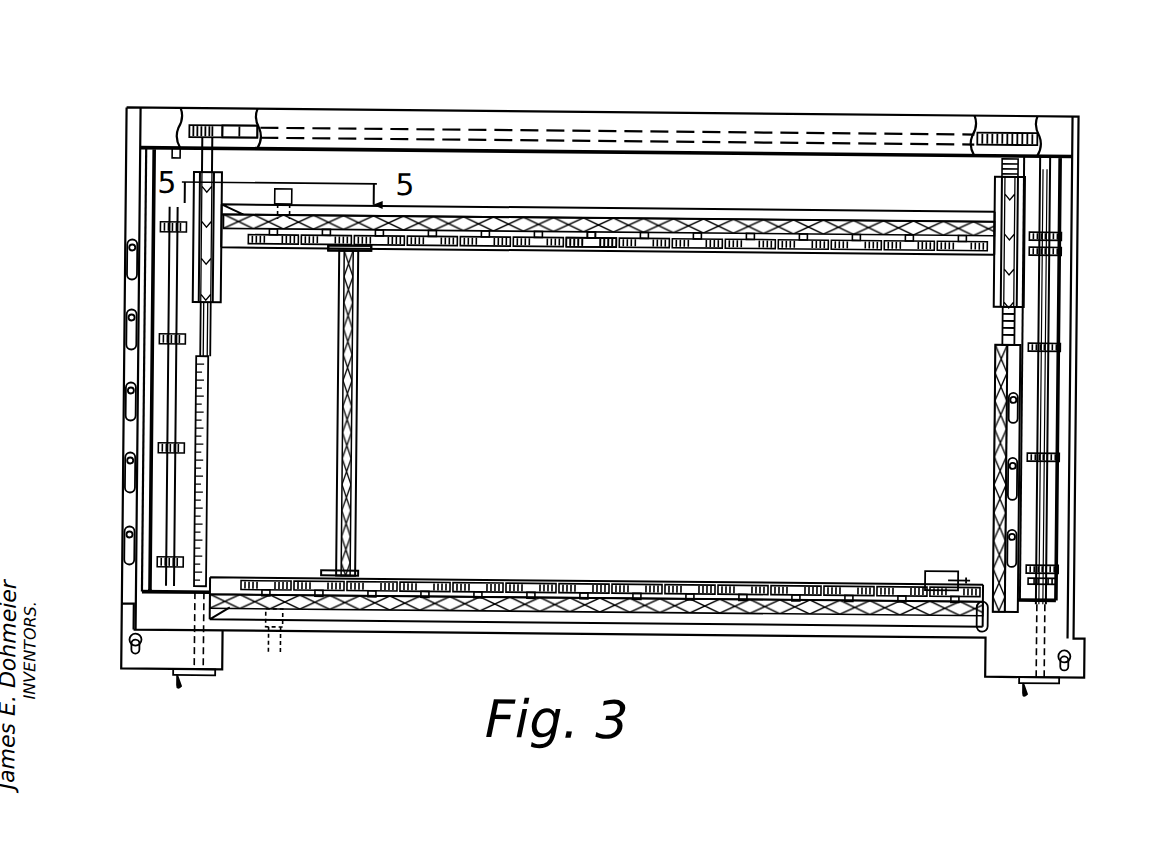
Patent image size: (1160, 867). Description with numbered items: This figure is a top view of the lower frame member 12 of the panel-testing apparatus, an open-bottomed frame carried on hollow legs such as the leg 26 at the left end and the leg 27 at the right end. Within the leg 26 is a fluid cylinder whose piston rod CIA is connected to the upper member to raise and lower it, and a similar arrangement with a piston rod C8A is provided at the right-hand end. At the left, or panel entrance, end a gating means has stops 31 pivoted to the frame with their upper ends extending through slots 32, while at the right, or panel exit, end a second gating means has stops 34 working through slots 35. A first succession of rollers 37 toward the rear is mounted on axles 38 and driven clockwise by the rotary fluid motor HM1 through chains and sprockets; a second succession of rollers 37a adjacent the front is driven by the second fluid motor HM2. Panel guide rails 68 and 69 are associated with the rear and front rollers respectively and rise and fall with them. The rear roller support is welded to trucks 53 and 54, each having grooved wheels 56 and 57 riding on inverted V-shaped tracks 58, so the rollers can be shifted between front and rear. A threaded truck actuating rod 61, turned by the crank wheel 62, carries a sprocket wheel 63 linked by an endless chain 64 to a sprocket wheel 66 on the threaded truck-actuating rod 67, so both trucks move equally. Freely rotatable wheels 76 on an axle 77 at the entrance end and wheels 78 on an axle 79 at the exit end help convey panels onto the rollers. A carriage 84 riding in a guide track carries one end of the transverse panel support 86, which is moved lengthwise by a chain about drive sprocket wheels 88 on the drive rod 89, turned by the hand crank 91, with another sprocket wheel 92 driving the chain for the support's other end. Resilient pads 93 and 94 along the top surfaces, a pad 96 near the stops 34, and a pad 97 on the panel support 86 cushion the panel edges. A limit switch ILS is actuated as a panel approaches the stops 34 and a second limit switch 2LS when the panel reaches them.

The lower frame member 12 is at (813, 106).
The hollow leg 26 is at (130, 651).
The hollow leg 27 is at (1087, 668).
The stops 31 is at (126, 332).
The slots 32 is at (126, 472).
The stops 34 is at (995, 392).
The slots 35 is at (1009, 548).
The rollers 37 is at (484, 249).
The rollers 37a is at (306, 584).
The axles 38 is at (590, 249).
The truck 53 is at (222, 304).
The truck 54 is at (993, 286).
The grooved wheel 56 is at (222, 180).
The grooved wheel 57 is at (211, 282).
The inverted V-shaped track 58 is at (209, 358).
The truck actuating rod 61 is at (208, 472).
The crank wheel 62 is at (213, 680).
The sprocket wheel 63 is at (197, 129).
The endless chain 64 is at (241, 129).
The sprocket wheel 66 is at (1008, 129).
The truck-actuating rod 67 is at (1000, 164).
The panel guide rail 68 is at (812, 208).
The panel guide rail 69 is at (805, 623).
The freely-rotatable wheels 76 is at (186, 446).
The axle 77 is at (166, 516).
The freely-rotatable wheels 78 is at (1062, 454).
The axle 79 is at (1043, 506).
The carriage 84 is at (372, 254).
The panel support 86 is at (340, 360).
The drive sprocket wheel 88 is at (1060, 247).
The drive rod 89 is at (1048, 297).
The hand crank 91 is at (1046, 688).
The sprocket wheel 92 is at (1060, 578).
The resilient pad 93 is at (655, 228).
The resilient pad 94 is at (666, 612).
The resilient pad 96 is at (996, 372).
The resilient panel support pad 97 is at (355, 360).
The rotary pressurized fluid-driven motor HM1 is at (290, 194).
The rotary pressurized fluid-driven motor HM2 is at (279, 646).
The limit switch ILS is at (940, 570).
The limit switch 2LS is at (980, 628).
The piston rod CIA is at (137, 662).
The piston rod C8A is at (1073, 655).